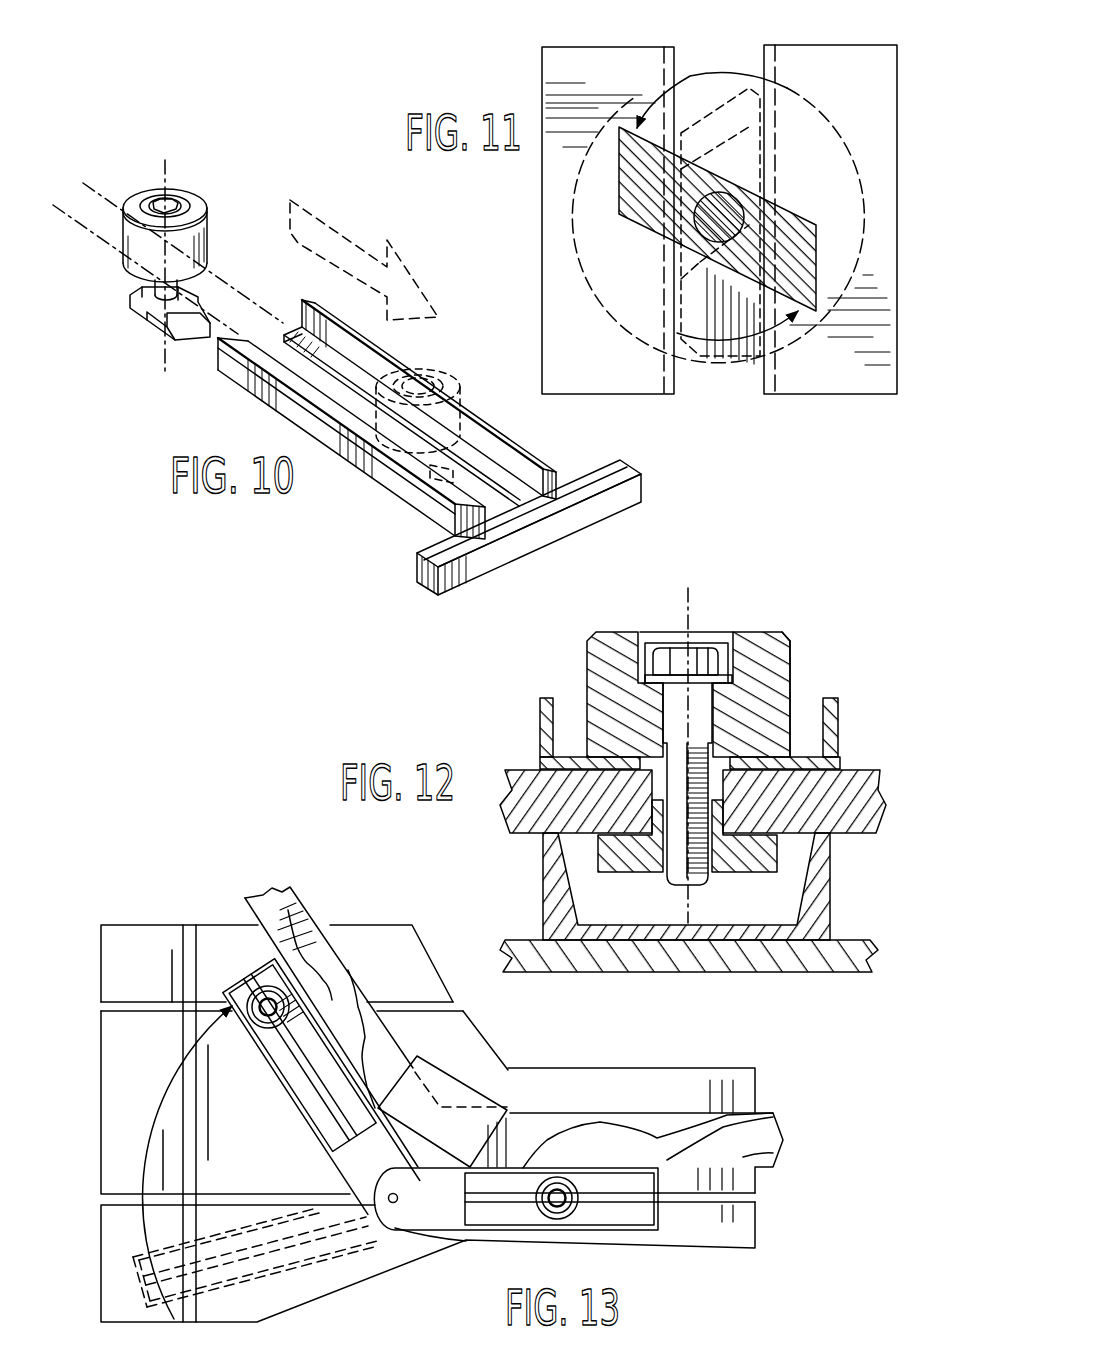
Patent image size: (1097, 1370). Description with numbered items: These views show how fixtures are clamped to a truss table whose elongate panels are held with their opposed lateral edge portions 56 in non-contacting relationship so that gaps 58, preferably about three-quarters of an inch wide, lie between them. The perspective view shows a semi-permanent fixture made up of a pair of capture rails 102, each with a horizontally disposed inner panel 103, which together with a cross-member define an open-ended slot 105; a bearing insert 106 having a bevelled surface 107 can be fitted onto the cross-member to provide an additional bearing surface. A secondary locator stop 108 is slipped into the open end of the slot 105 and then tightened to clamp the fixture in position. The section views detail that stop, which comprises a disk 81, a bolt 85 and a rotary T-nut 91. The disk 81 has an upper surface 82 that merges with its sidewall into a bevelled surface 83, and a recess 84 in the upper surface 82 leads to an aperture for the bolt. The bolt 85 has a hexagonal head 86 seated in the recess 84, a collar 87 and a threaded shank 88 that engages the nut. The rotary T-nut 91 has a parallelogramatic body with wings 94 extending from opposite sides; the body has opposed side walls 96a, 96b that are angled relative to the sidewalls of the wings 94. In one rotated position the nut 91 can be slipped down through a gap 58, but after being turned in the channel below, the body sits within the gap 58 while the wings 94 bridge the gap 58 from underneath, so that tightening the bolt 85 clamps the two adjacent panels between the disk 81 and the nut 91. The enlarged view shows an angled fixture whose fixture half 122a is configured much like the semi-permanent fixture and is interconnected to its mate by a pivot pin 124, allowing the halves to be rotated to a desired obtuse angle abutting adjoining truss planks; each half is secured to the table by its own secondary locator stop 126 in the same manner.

In FIG. 11, the lateral edge portions 56 is at (644, 382).
In FIG. 11, the gap 58 is at (721, 63).
In FIG. 13, the gap 58 is at (103, 1006).
In FIG. 10, the disk 81 is at (143, 262).
In FIG. 12, the disk 81 is at (798, 645).
In FIG. 12, the upper surface 82 is at (764, 630).
In FIG. 12, the bevelled surface 83 is at (788, 634).
In FIG. 12, the recess 84 is at (794, 660).
In FIG. 11, the bolt 85 is at (694, 217).
In FIG. 12, the hexagonal head 86 is at (693, 660).
In FIG. 12, the collar 87 is at (728, 680).
In FIG. 11, the threaded shank 88 is at (720, 226).
In FIG. 12, the threaded shank 88 is at (675, 863).
In FIG. 10, the rotary T-nut 91 is at (155, 320).
In FIG. 11, the wings 94 is at (627, 182).
In FIG. 12, the wings 94 is at (605, 858).
In FIG. 12, the side wall 96a is at (790, 780).
In FIG. 12, the side wall 96b is at (650, 806).
In FIG. 12, the capture rails 102 is at (540, 712).
In FIG. 12, the inner panel 103 is at (572, 755).
In FIG. 10, the open-ended slot 105 is at (310, 372).
In FIG. 10, the bearing insert 106 is at (543, 535).
In FIG. 10, the bevelled surface 107 is at (616, 483).
In FIG. 10, the secondary locator stop 108 is at (217, 213).
In FIG. 13, the fixture half 122a is at (327, 1133).
In FIG. 13, the pivot pin 124 is at (392, 1215).
In FIG. 13, the secondary locator stop 126 is at (268, 1027).